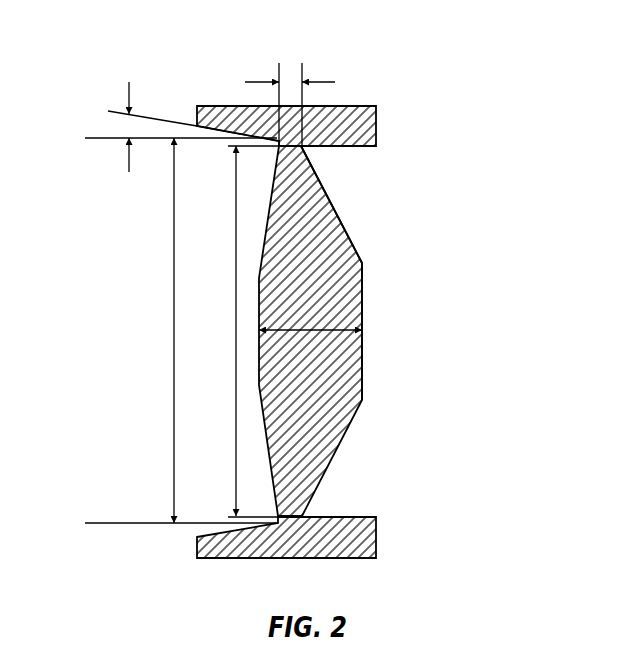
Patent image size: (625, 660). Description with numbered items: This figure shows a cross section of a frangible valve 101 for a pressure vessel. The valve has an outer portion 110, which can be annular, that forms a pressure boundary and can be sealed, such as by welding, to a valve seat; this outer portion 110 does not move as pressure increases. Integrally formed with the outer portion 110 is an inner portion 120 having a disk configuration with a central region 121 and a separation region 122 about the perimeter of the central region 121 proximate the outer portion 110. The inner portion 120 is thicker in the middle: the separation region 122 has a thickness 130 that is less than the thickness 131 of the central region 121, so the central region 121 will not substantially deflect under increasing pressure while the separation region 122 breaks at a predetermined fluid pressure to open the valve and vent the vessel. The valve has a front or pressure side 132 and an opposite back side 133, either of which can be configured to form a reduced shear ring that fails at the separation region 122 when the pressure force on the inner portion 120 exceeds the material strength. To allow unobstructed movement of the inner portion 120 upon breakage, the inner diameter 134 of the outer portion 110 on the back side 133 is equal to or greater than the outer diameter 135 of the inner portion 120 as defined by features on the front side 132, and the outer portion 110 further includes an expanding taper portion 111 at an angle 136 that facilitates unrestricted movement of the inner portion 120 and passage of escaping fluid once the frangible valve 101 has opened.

The frangible valve 101 is at (309, 332).
The outer portion 110 is at (380, 122).
The expanding taper portion 111 is at (213, 128).
The inner portion 120 is at (436, 301).
The central region 121 is at (374, 314).
The separation region 122 is at (314, 153).
The thickness of the separation region 130 is at (324, 81).
The thickness of the central region 131 is at (328, 331).
The front or pressure side 132 is at (428, 215).
The back side 133 is at (99, 287).
The inner diameter of the outer portion 134 is at (173, 377).
The outer diameter of the inner portion 135 is at (235, 300).
The angle 136 is at (129, 100).